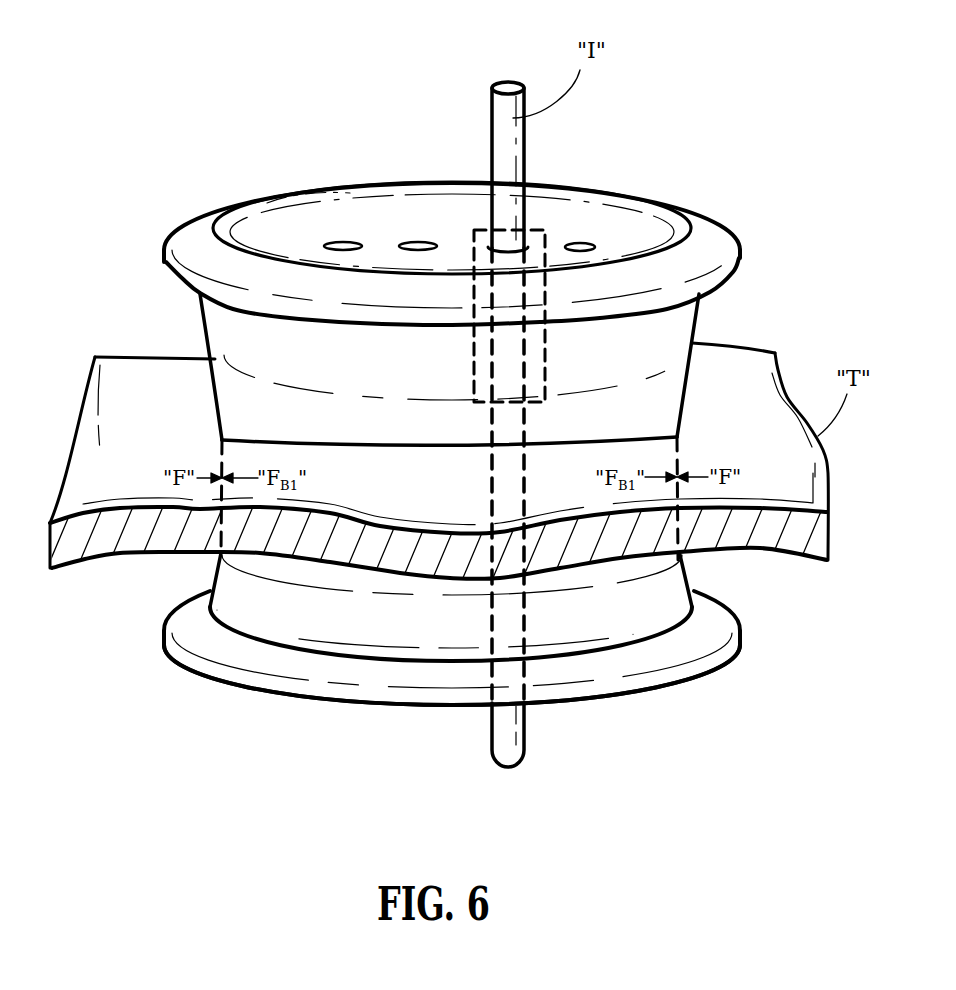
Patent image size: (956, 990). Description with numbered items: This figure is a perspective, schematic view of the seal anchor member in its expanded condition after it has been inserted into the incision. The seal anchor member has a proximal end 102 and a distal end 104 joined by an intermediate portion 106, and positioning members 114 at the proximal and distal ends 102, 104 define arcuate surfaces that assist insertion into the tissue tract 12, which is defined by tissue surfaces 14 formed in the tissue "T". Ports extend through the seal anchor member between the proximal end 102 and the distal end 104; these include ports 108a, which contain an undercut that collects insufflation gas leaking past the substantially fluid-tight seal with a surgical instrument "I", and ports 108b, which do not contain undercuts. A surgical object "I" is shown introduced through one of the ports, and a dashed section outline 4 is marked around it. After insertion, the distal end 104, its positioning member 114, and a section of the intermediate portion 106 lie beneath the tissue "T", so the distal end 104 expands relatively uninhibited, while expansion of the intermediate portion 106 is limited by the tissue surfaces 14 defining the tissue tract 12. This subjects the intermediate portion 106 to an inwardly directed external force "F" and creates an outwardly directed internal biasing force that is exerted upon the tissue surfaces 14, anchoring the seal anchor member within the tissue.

The section line indicator 4 is at (553, 232).
The tissue tract 12 is at (365, 450).
The tissue surfaces 14 is at (90, 395).
The proximal end 102 is at (260, 253).
The distal end 104 is at (253, 690).
The intermediate portion 106 is at (253, 343).
The ports 108a is at (490, 245).
The ports 108b is at (578, 243).
The positioning members 114 is at (702, 230).